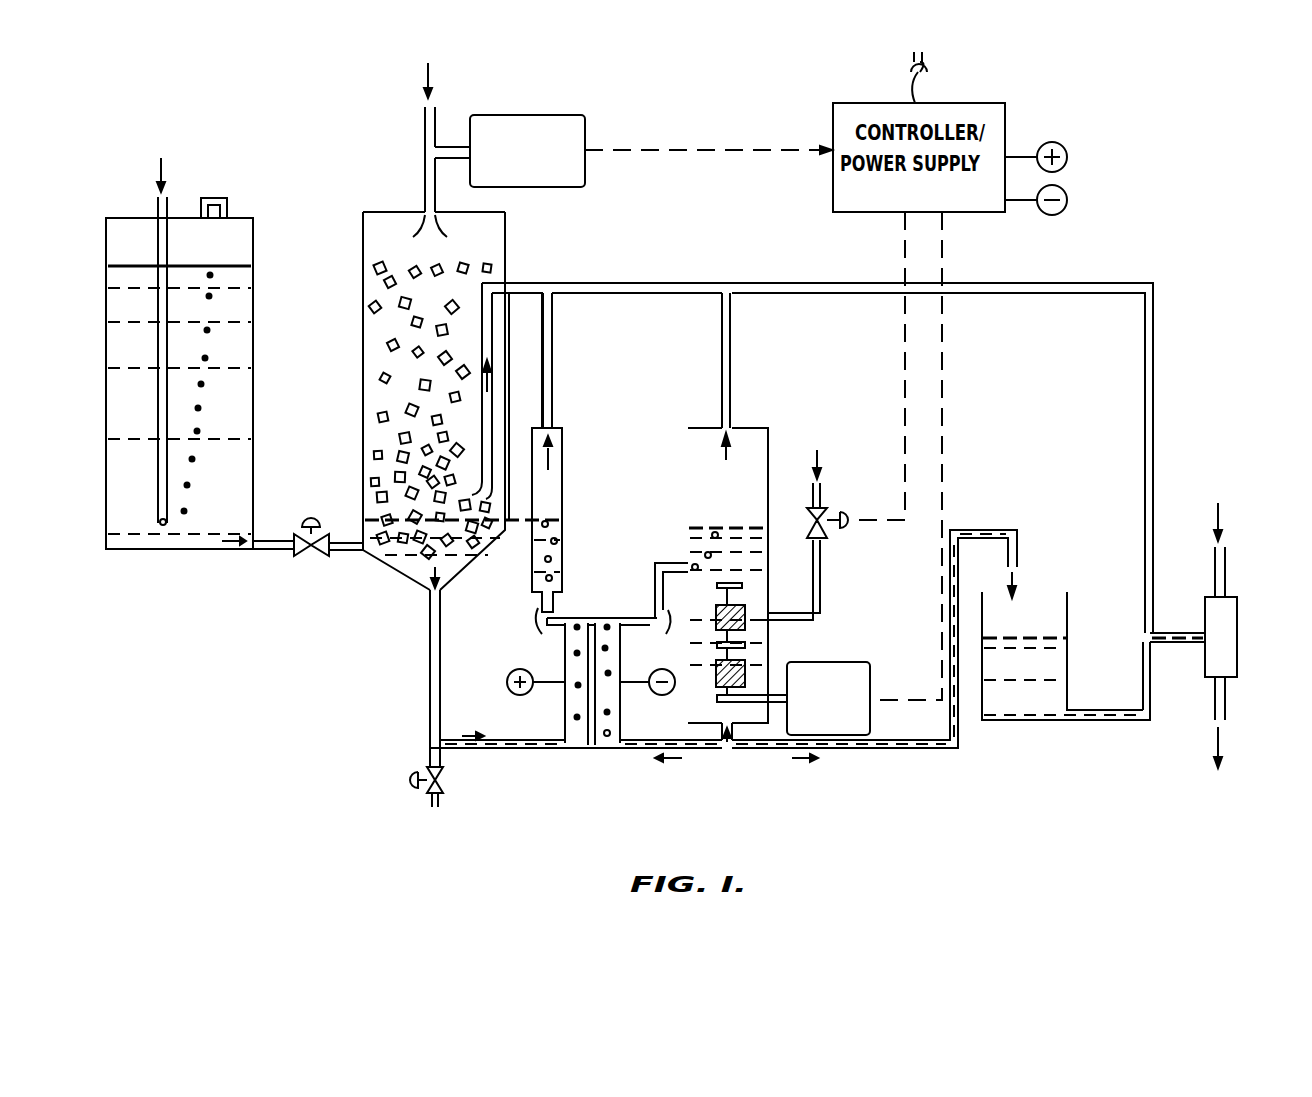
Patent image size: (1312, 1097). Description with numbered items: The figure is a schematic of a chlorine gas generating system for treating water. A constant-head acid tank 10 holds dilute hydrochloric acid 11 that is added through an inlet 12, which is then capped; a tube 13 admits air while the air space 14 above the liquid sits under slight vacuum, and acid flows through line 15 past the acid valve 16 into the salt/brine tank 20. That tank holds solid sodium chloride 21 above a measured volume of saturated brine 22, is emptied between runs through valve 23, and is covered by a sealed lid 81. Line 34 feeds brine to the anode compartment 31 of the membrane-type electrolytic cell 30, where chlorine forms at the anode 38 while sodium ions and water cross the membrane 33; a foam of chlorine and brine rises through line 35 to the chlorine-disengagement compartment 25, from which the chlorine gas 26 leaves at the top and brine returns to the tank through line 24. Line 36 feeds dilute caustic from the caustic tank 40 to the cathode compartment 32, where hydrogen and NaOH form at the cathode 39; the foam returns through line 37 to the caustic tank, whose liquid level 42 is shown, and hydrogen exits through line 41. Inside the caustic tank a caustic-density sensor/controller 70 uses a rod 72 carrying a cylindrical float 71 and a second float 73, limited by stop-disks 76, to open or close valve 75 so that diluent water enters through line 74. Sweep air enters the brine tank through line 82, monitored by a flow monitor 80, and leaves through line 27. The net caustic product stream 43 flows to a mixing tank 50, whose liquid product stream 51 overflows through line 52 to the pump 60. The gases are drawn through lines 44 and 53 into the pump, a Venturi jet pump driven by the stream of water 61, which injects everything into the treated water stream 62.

The constant-head acid tank 10 is at (106, 377).
The hydrochloric acid 11 is at (128, 447).
The inlet 12 is at (225, 200).
The tube 13 is at (168, 252).
The air space 14 is at (240, 256).
The line 15 is at (290, 550).
The acid valve 16 is at (320, 558).
The salt/brine tank 20 is at (363, 444).
The solid sodium chloride 21 is at (468, 264).
The saturated brine 22 is at (422, 571).
The valve 23 is at (427, 795).
The line 24 is at (521, 529).
The chlorine-disengagement compartment 25 is at (562, 496).
The chlorine gas 26 is at (553, 348).
The line 27 is at (492, 406).
The membrane-type electrolytic cell 30 is at (604, 752).
The anode compartment 31 is at (573, 705).
The cathode compartment 32 is at (602, 713).
The membrane 33 is at (598, 664).
The line 34 is at (508, 751).
The line 35 is at (538, 595).
The line 36 is at (636, 751).
The line 37 is at (655, 613).
The anode 38 is at (565, 651).
The cathode 39 is at (620, 725).
The caustic tank 40 is at (688, 511).
The line 41 is at (732, 342).
The catholyte liquid level 42 is at (690, 538).
The net caustic product stream 43 is at (884, 750).
The line 44 is at (802, 286).
The mixing tank 50 is at (1017, 722).
The liquid product stream 51 is at (1052, 686).
The line 52 is at (1097, 714).
The line 53 is at (1183, 647).
The pump 60 is at (1237, 626).
The stream of water 61 is at (1228, 583).
The water stream 62 is at (1228, 704).
The caustic-density sensor/controller 70 is at (872, 667).
The cylindrical float 71 is at (717, 659).
The rod 72 is at (740, 655).
The second float 73 is at (745, 612).
The line 74 is at (821, 604).
The valve 75 is at (828, 510).
The stop-disks 76 is at (727, 583).
The flow monitor 80 is at (575, 115).
The lid 81 is at (507, 222).
The line 82 is at (426, 181).